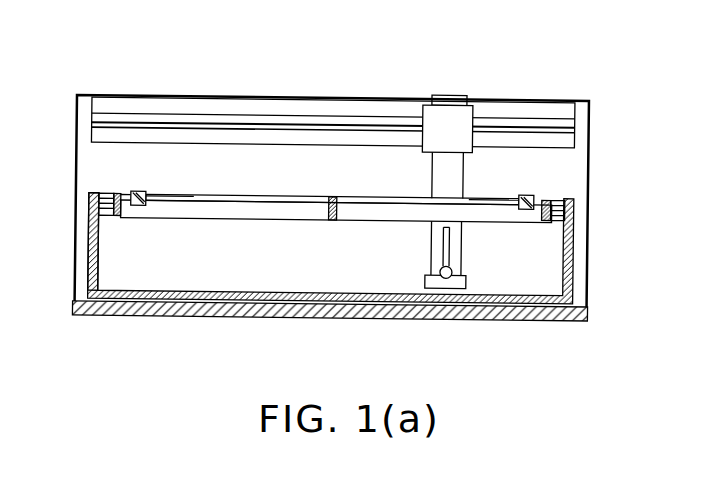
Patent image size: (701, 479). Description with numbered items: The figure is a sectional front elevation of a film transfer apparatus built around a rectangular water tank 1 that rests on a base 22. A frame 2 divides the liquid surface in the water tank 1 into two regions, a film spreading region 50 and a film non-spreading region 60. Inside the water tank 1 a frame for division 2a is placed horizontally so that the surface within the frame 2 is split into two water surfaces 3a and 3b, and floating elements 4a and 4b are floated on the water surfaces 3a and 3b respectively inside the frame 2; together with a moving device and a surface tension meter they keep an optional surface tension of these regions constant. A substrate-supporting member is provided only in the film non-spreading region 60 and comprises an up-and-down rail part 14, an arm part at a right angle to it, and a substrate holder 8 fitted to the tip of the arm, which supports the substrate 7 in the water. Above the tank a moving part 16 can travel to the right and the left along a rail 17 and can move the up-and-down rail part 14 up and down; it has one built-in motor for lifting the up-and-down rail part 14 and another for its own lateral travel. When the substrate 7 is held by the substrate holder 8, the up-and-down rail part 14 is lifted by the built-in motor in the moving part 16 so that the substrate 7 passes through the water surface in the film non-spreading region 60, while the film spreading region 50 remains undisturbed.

The water tank 1 is at (578, 254).
The frame 2 is at (97, 188).
The frame for division 2a is at (333, 194).
The water surface 3a is at (488, 205).
The water surface 3b is at (195, 201).
The floating element 4a is at (528, 190).
The floating element 4b is at (135, 191).
The substrate 7 is at (452, 241).
The substrate holder 8 is at (448, 274).
The up-and-down rail part 14 is at (432, 169).
The moving part 16 is at (467, 108).
The rail 17 is at (507, 102).
The base 22 is at (590, 301).
The film spreading region 50 is at (237, 194).
The film non-spreading region 60 is at (88, 192).